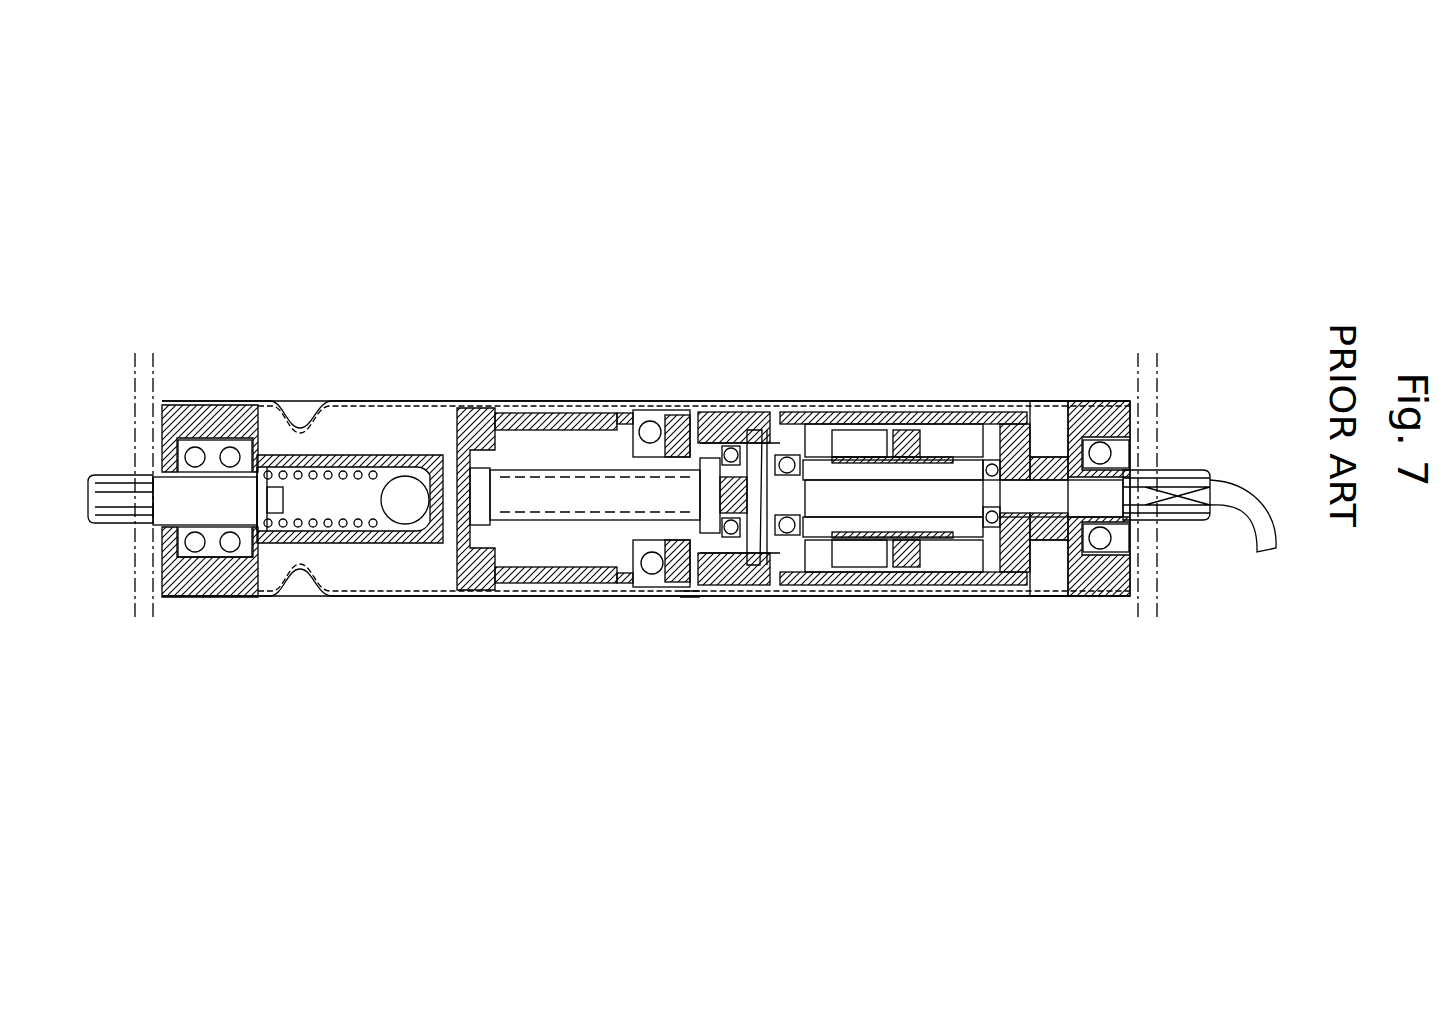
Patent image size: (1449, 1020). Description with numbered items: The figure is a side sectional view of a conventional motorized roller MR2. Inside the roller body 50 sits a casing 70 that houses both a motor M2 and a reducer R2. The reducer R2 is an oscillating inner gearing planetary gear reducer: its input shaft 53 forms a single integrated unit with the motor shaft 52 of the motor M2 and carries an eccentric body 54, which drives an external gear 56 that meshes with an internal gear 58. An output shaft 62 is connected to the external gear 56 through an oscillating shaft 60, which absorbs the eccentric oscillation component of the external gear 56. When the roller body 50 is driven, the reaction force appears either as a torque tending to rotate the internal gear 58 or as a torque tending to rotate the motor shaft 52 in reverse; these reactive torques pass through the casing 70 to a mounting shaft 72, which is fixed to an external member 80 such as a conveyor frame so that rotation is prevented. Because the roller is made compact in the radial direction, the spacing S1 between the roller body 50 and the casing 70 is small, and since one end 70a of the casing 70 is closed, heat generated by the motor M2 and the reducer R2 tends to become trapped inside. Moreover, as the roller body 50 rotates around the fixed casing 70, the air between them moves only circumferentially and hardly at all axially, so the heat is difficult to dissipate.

The roller body 50 is at (865, 400).
The motor shaft 52 is at (795, 567).
The input shaft 53 is at (742, 567).
The eccentric body 54 is at (767, 412).
The external gear 56 is at (703, 412).
The internal gear 58 is at (725, 412).
The oscillating shaft 60 is at (528, 507).
The output shaft 62 is at (480, 412).
The casing 70 is at (962, 596).
The one end of the casing 70a is at (689, 596).
The mounting shaft 72 is at (1182, 470).
The external member 80 is at (145, 622).
The motor M2 is at (933, 377).
The motorized roller MR2 is at (853, 213).
The reducer R2 is at (785, 379).
The spacing S1 is at (1053, 400).